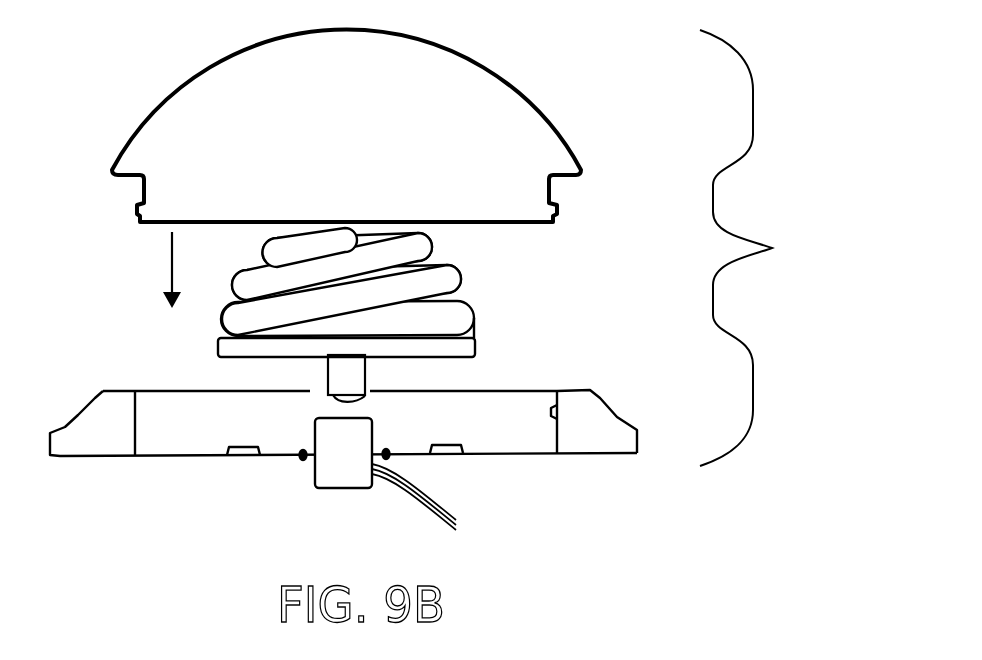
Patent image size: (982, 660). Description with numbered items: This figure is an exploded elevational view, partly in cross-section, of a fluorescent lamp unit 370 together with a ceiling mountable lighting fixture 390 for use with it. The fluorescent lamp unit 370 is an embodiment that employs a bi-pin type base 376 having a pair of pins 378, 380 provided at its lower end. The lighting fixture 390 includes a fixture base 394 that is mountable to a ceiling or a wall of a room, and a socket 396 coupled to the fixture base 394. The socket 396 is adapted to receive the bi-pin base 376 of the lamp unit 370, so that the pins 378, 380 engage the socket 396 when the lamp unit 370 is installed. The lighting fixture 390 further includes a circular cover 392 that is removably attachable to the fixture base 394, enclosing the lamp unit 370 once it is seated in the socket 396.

The circular cover 392 is at (545, 145).
The fluorescent lamp unit 370 is at (480, 270).
The bi-pin type base 376 is at (340, 372).
The pin 380 is at (365, 397).
The pin 378 is at (343, 398).
The fixture base 394 is at (597, 413).
The socket 396 is at (317, 470).
The lighting fixture 390 is at (772, 248).